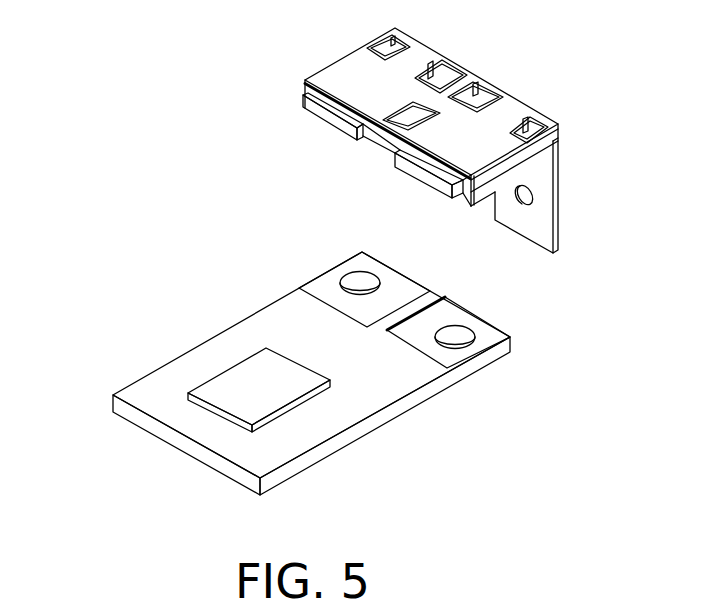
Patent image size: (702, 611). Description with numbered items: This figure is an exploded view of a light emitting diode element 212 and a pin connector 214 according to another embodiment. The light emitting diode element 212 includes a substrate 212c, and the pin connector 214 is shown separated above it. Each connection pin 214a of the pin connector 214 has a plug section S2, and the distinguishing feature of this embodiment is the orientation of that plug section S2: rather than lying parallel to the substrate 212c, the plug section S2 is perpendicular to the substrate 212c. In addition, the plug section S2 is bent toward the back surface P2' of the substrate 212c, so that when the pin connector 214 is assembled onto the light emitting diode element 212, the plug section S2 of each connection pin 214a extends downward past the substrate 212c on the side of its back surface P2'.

The pin connector 214 is at (338, 41).
The connection pin 214a is at (540, 224).
The plug section S2 is at (572, 138).
The light emitting diode element 212 is at (383, 460).
The substrate 212c is at (240, 337).
The back surface P2' is at (92, 473).